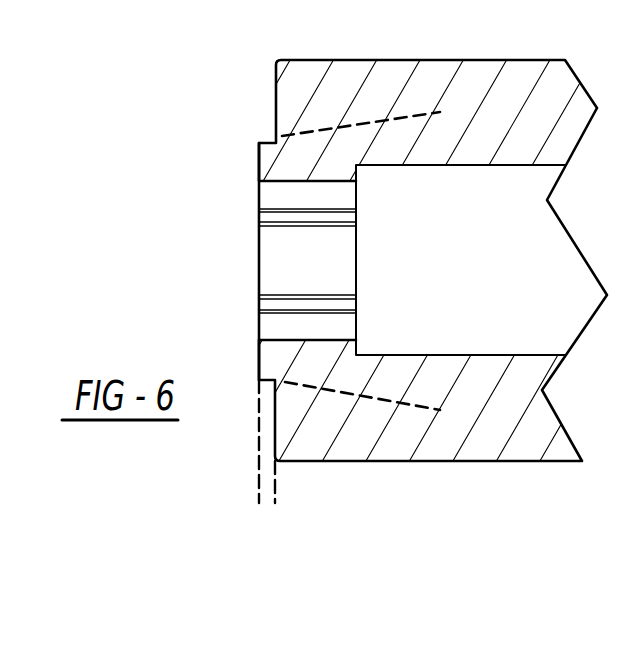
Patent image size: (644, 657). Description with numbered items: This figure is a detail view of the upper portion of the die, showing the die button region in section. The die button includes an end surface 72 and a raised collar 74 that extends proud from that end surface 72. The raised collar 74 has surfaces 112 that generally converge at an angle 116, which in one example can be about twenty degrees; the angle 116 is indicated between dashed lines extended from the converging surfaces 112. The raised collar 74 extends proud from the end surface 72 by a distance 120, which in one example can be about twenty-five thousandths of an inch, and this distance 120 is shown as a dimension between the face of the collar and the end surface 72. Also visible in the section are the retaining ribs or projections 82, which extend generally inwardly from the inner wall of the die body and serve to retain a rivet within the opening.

The end surface 72 is at (277, 82).
The raised collar 74 is at (275, 157).
The retaining ribs or projections 82 is at (320, 302).
The surfaces 112 is at (272, 138).
The angle 116 is at (418, 117).
The distance 120 is at (322, 486).